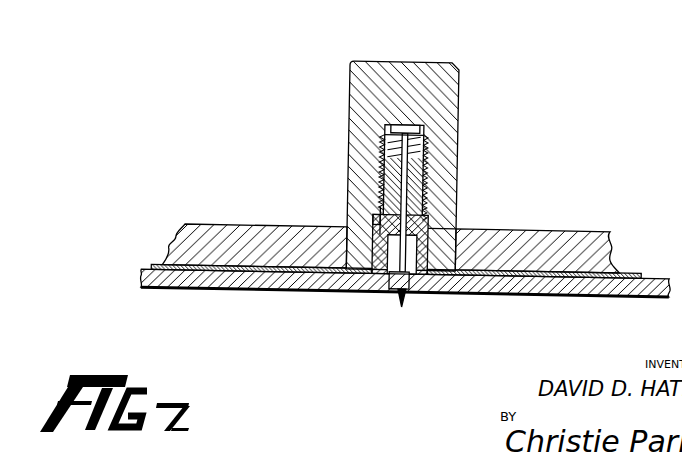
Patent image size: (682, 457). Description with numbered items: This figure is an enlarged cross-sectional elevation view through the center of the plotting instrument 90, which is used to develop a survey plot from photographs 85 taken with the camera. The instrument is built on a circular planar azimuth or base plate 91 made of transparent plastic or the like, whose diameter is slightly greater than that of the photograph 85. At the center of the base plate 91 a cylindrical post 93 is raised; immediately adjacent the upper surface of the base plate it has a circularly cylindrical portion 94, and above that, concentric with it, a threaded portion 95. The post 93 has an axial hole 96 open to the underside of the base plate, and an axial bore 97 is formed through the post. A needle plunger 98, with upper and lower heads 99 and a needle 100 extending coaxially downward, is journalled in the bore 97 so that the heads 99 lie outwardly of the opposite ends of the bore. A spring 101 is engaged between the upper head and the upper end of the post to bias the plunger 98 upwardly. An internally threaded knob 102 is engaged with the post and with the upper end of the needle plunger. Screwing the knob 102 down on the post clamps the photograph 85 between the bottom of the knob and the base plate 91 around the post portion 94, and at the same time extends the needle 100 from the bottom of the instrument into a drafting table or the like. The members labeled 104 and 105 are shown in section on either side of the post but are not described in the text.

The plotting instrument 90 is at (407, 177).
The internally threaded knob 102 is at (435, 62).
The upper and lower heads 99 is at (407, 124).
The spring 101 is at (385, 138).
The cylindrical post 93 is at (427, 170).
The threaded portion 95 is at (385, 170).
The needle plunger 98 is at (376, 210).
The axial bore 97 is at (405, 205).
The circularly cylindrical portion 94 is at (456, 221).
The left plate 104 is at (202, 222).
The right plate 105 is at (580, 229).
The photograph 85 is at (622, 267).
The base plate 91 is at (523, 293).
The needle 100 is at (399, 294).
The axial hole 96 is at (409, 292).